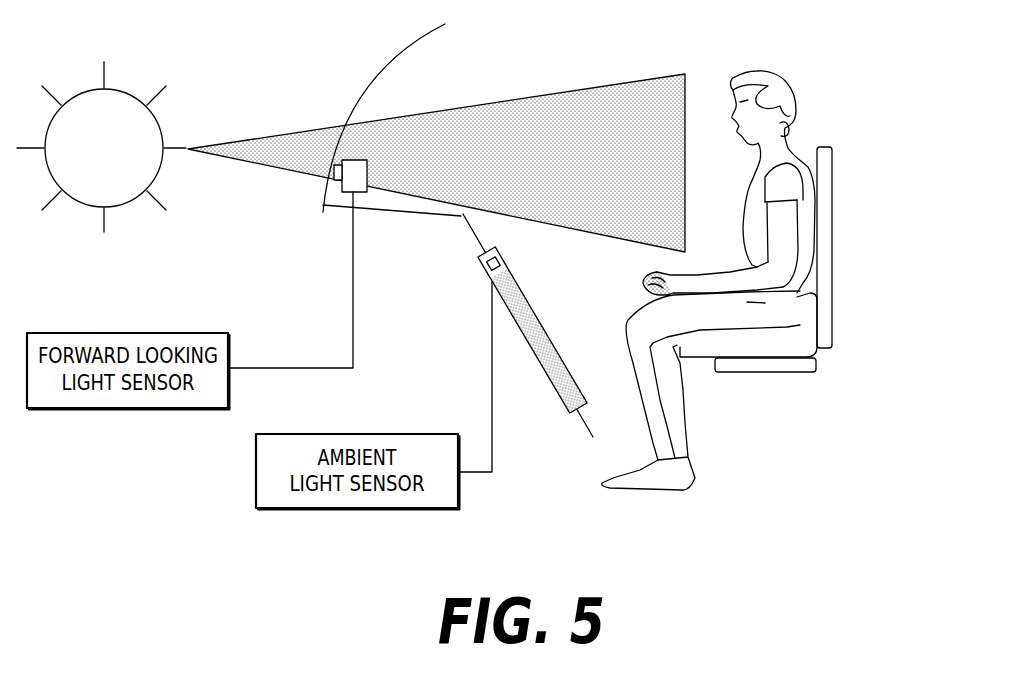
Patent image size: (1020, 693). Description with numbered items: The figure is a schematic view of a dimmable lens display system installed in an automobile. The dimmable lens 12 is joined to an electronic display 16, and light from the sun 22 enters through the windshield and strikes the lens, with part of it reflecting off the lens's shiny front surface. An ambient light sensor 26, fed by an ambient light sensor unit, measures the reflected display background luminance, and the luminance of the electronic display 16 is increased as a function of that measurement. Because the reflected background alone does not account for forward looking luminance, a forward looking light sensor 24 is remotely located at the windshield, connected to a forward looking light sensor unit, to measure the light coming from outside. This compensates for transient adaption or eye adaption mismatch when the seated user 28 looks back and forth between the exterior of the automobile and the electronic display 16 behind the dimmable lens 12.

The dimmable lens 12 is at (543, 313).
The electronic display 16 is at (540, 375).
The sun 22 is at (122, 88).
The forward looking light sensor 24 is at (361, 157).
The ambient light sensor 26 is at (508, 257).
The user 28 is at (828, 46).